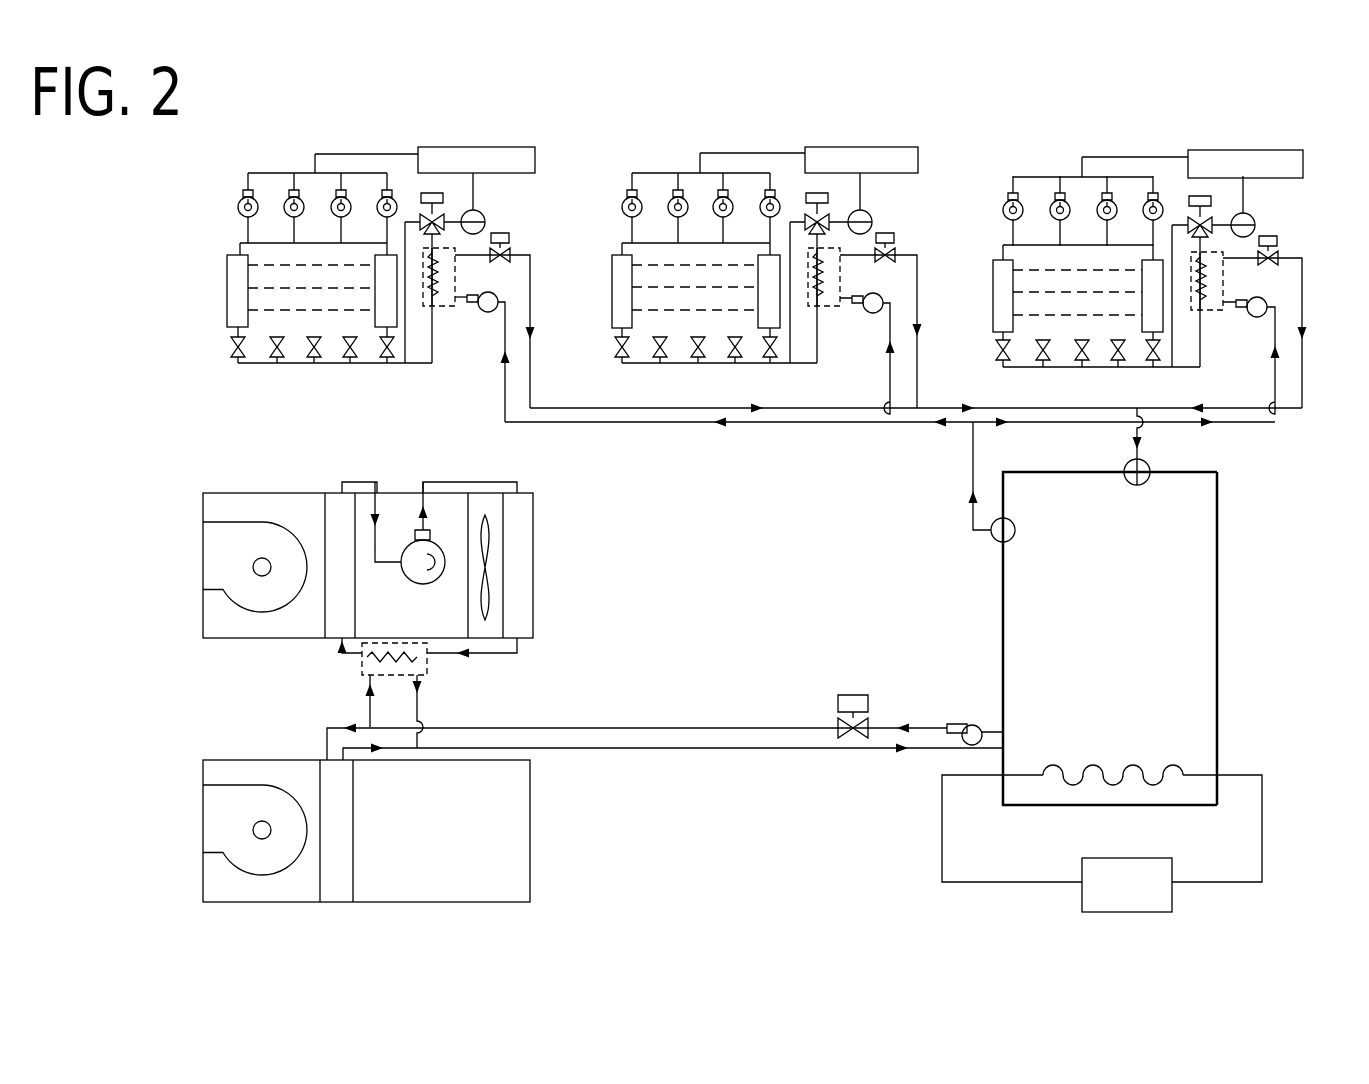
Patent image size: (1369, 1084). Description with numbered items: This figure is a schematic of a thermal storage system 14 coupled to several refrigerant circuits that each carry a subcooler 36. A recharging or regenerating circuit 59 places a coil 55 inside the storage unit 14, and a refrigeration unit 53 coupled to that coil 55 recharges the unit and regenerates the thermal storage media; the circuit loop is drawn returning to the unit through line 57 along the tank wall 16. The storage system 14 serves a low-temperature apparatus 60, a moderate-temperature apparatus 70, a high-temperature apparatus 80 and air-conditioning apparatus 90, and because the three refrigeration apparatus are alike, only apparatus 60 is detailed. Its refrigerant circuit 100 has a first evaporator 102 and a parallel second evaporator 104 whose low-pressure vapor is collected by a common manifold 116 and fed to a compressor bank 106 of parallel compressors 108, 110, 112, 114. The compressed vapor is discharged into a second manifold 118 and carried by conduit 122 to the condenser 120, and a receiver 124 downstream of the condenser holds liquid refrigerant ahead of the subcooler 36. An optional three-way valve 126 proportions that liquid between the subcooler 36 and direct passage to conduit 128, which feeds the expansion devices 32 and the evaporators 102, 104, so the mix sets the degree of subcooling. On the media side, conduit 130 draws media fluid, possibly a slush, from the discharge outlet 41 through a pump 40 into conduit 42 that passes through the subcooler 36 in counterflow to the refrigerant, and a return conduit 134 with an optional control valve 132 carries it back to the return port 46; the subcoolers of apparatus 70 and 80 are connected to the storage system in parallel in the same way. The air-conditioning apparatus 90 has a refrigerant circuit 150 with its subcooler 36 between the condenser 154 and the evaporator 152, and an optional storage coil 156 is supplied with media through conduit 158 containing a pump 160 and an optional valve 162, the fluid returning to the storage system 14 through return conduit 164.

The thermal storage system 14 is at (1225, 535).
The tank wall 16 is at (1220, 647).
The expansion device 32 is at (272, 350).
The subcooler 36 is at (446, 317).
The pump 40 is at (488, 312).
The discharge outlet 41 is at (1015, 527).
The conduit 42 is at (461, 297).
The return port 46 is at (1137, 485).
The refrigeration unit 53 is at (1133, 913).
The coil 55 is at (1105, 768).
The refrigerant supply line 57 is at (1262, 822).
The regenerating circuit 59 is at (960, 890).
The low-temperature apparatus 60 is at (393, 108).
The moderate-temperature apparatus 70 is at (773, 108).
The high-temperature apparatus 80 is at (1166, 112).
The air-conditioning apparatus 90 is at (151, 565).
The refrigerant circuit 100 is at (208, 295).
The first evaporator 102 is at (227, 315).
The second evaporator 104 is at (375, 293).
The compressor bank 106 is at (230, 213).
The compressor 108 is at (256, 217).
The compressor 110 is at (302, 217).
The compressor 112 is at (382, 204).
The compressor 114 is at (349, 217).
The manifold 116 is at (238, 247).
The second manifold 118 is at (265, 173).
The condenser 120 is at (490, 147).
The conduit 122 is at (370, 152).
The receiver 124 is at (485, 222).
The three-way valve 126 is at (443, 220).
The conduit 128 is at (393, 363).
The conduit 130 is at (615, 422).
The control valve 132 is at (500, 262).
The media return conduit 134 is at (627, 408).
The refrigerant circuit 150 is at (310, 618).
The evaporator 152 is at (323, 513).
The condenser 154 is at (520, 572).
The storage coil 156 is at (333, 883).
The conduit 158 is at (647, 728).
The pump 160 is at (972, 723).
The valve 162 is at (840, 725).
The return conduit 164 is at (690, 750).